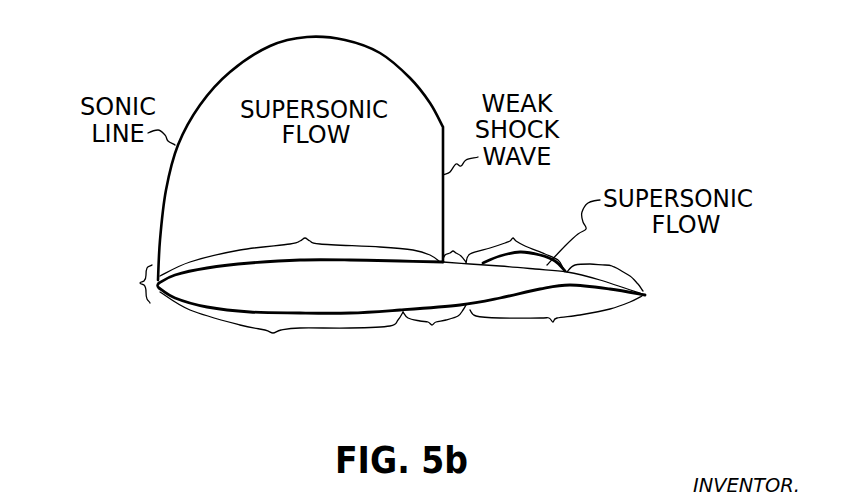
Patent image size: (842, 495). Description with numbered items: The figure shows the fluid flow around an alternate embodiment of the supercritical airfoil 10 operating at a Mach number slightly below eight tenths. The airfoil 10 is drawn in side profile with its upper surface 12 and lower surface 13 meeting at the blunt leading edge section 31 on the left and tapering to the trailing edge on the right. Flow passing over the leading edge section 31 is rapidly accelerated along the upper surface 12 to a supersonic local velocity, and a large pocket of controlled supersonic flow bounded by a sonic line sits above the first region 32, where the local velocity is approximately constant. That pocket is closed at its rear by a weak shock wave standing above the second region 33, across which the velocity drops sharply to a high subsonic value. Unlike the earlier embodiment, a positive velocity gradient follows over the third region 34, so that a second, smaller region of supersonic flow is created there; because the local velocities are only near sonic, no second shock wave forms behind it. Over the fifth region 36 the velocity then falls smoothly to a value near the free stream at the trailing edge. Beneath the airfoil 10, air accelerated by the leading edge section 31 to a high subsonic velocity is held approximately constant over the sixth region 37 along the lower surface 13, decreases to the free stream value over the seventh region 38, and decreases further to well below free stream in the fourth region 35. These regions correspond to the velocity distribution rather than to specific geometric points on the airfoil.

The supercritical airfoil 10 is at (402, 287).
The upper surface 12 is at (377, 263).
The lower surface 13 is at (346, 312).
The leading edge section 31 is at (127, 284).
The first region 32 is at (300, 240).
The second region 33 is at (458, 237).
The third region 34 is at (514, 238).
The fourth region 35 is at (556, 324).
The fifth region 36 is at (605, 266).
The sixth region 37 is at (281, 330).
The seventh region 38 is at (434, 331).